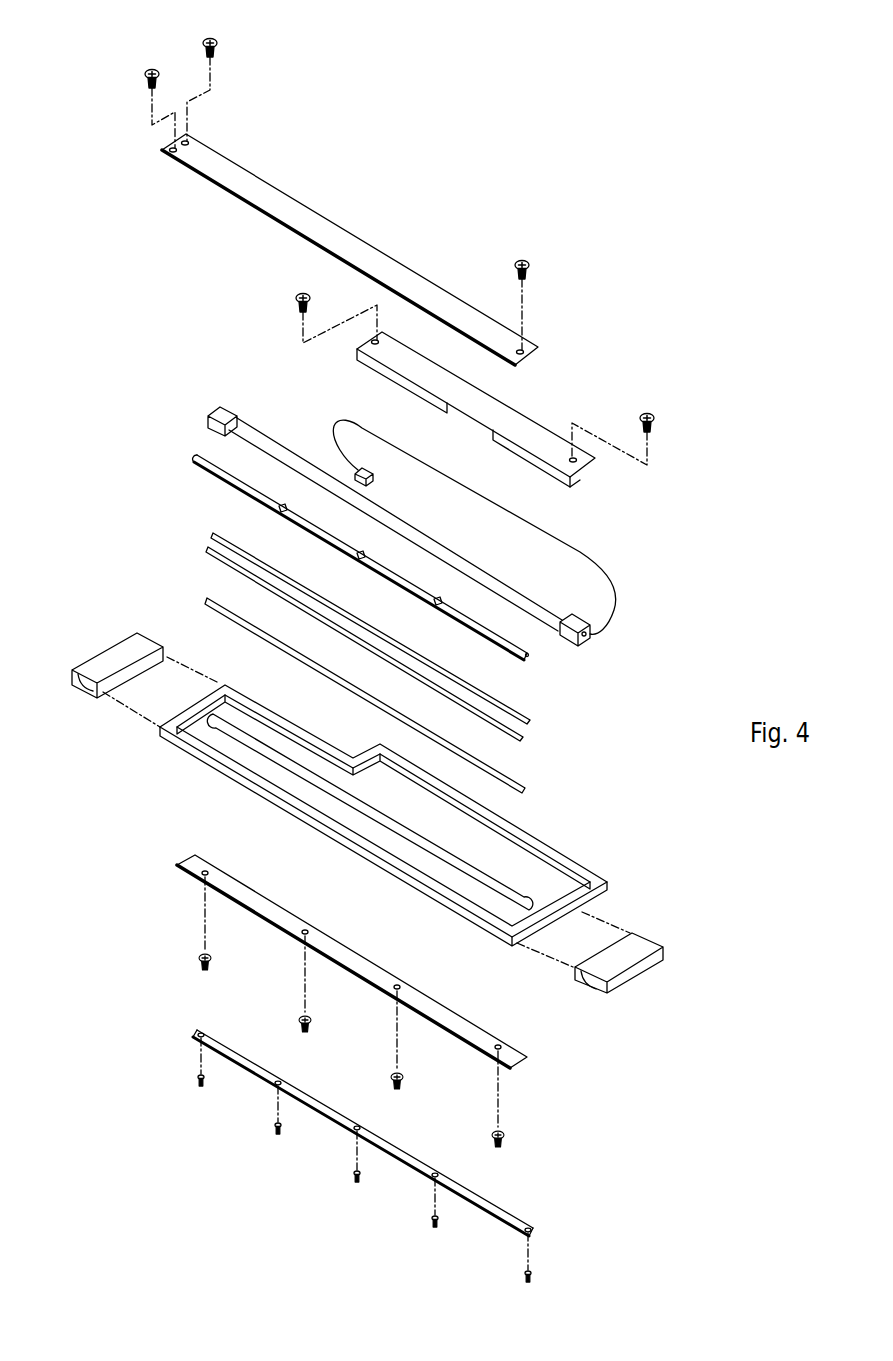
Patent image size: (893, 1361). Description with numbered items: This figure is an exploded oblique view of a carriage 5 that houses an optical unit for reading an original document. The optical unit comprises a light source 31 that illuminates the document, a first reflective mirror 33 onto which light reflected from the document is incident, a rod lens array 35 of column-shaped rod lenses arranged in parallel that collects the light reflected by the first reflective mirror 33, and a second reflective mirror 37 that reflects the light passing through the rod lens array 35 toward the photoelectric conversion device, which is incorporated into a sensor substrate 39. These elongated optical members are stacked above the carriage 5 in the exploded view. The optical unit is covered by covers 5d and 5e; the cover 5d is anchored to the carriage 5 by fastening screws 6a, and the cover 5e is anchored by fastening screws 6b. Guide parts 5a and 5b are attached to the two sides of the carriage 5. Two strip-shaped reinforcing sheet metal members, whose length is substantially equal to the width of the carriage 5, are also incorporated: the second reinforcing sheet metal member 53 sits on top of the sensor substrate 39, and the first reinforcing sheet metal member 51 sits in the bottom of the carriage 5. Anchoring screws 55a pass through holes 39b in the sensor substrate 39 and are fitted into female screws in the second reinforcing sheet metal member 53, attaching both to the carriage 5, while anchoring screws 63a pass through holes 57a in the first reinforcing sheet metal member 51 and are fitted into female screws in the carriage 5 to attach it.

The carriage 5 is at (553, 872).
The guide part 5a is at (638, 930).
The guide part 5b is at (108, 644).
The cover 5d is at (373, 253).
The cover 5e is at (521, 412).
The fastening screw 6a is at (146, 72).
The fastening screw 6b is at (300, 293).
The light source 31 is at (545, 604).
The first reflective mirror 33 is at (530, 722).
The rod lens array 35 is at (219, 603).
The second reflective mirror 37 is at (523, 738).
The sensor substrate 39 is at (361, 962).
The hole 39b is at (206, 870).
The first reinforcing sheet metal member 51 is at (247, 1070).
The second reinforcing sheet metal member 53 is at (230, 468).
The anchoring screw 55a is at (205, 971).
The hole 57a is at (198, 1034).
The anchoring screw 63a is at (201, 1087).